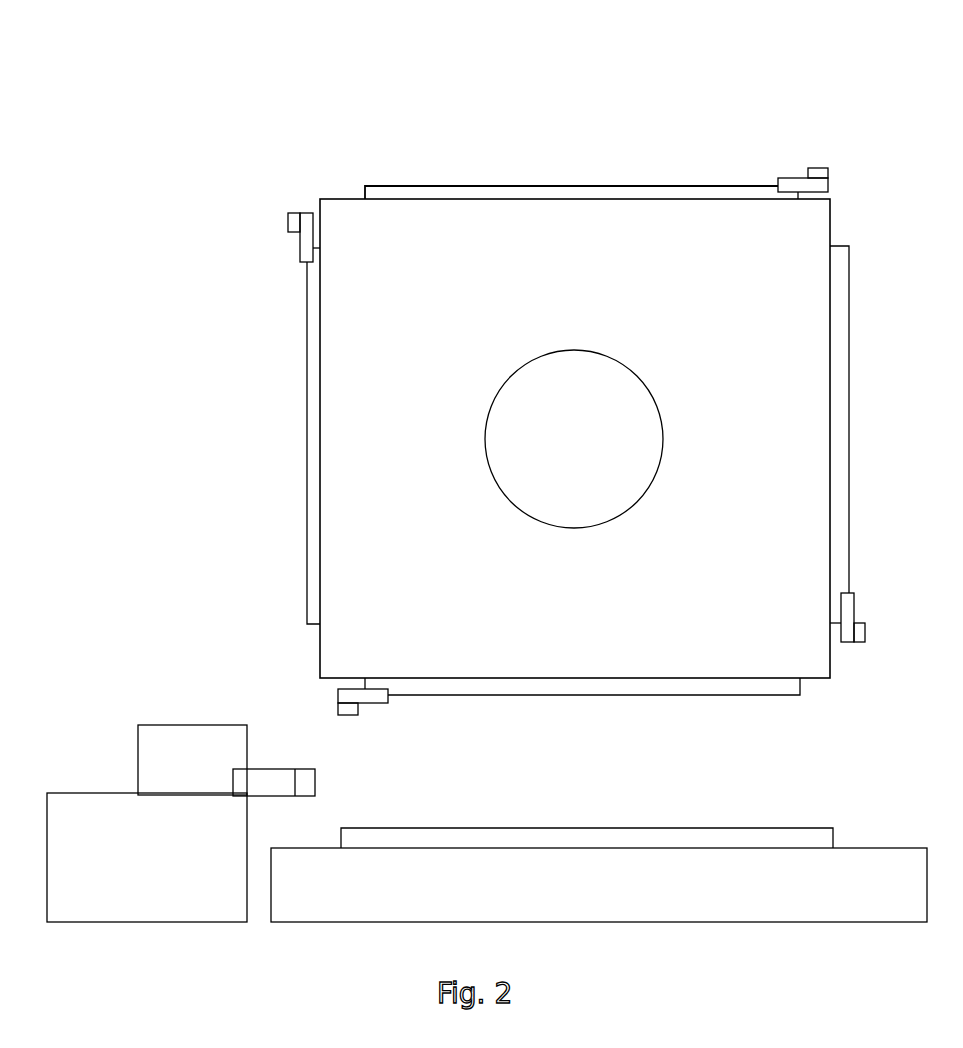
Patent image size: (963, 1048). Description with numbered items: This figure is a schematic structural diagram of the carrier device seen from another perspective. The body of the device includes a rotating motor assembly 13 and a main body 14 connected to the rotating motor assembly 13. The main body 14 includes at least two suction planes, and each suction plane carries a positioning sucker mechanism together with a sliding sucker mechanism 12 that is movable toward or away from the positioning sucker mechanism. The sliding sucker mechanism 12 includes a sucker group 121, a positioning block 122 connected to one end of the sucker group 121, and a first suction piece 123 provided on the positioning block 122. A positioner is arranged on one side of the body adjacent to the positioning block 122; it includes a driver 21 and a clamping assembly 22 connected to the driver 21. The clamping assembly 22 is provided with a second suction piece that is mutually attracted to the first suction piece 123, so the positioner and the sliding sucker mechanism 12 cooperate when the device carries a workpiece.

The sliding sucker mechanism 12 is at (596, 105).
The sucker group 121 is at (635, 183).
The positioning block 122 is at (787, 180).
The first suction piece 123 is at (804, 125).
The rotating motor assembly 13 is at (505, 432).
The main body 14 is at (345, 215).
The driver 21 is at (118, 853).
The clamping assembly 22 is at (192, 752).